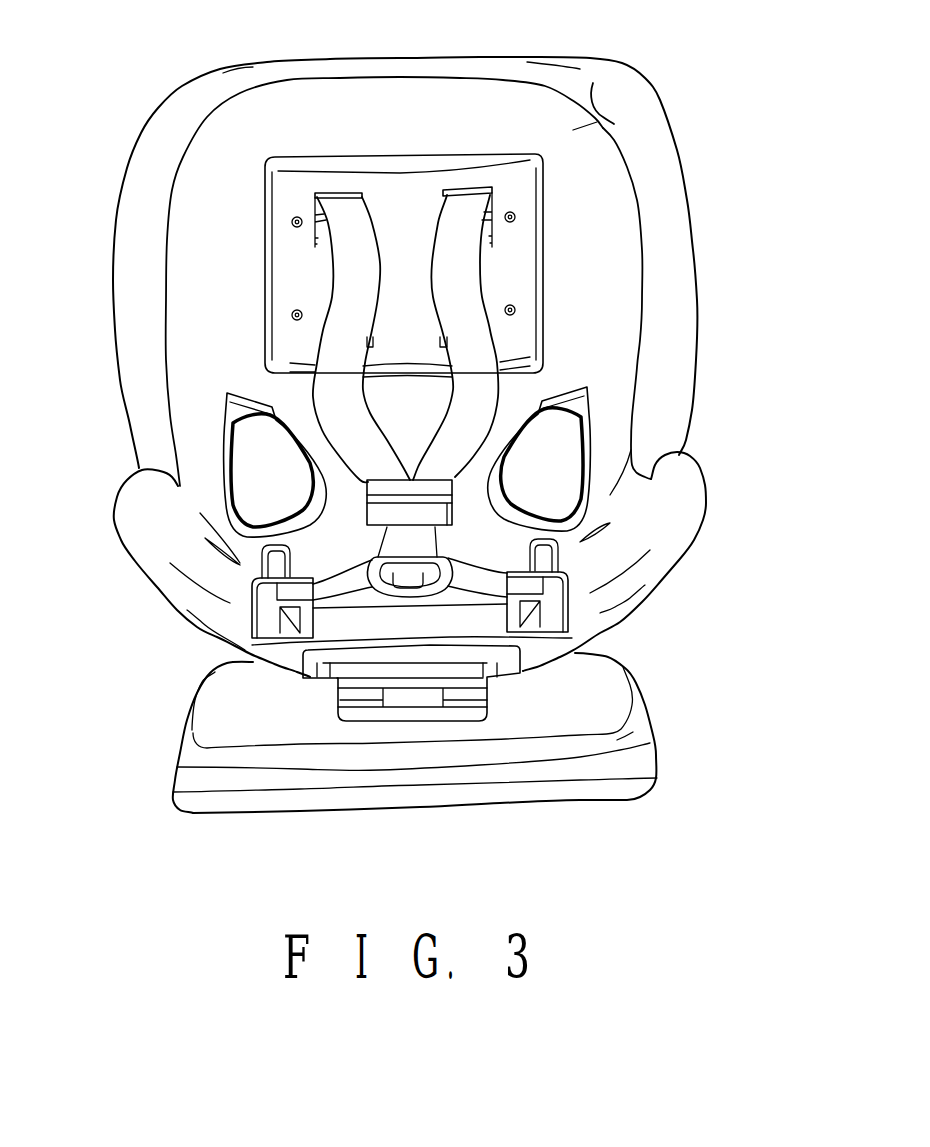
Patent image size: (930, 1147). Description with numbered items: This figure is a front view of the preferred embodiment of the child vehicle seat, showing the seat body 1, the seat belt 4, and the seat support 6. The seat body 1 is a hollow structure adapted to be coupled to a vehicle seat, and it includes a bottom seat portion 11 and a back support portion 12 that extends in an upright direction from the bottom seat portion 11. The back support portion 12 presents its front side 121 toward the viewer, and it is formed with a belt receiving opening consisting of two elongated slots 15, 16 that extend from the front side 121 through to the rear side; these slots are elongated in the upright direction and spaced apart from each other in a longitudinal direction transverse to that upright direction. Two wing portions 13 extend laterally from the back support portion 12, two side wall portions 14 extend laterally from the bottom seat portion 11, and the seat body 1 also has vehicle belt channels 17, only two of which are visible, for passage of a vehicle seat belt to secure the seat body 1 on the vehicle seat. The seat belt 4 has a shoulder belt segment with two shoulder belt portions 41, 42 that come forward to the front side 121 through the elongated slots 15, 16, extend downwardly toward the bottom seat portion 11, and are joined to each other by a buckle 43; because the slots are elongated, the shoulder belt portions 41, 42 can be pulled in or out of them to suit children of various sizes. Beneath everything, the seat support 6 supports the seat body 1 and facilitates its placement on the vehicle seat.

The seat body 1 is at (620, 330).
The seat belt 4 is at (382, 203).
The seat support 6 is at (640, 718).
The bottom seat portion 11 is at (613, 487).
The back support portion 12 is at (613, 183).
The wing portions 13 is at (160, 137).
The side wall portions 14 is at (133, 507).
The elongated slot 15 is at (323, 262).
The elongated slot 16 is at (483, 262).
The vehicle belt channels 17 is at (263, 463).
The shoulder belt portion 41 is at (342, 207).
The shoulder belt portion 42 is at (460, 212).
The buckle 43 is at (447, 508).
The front side 121 is at (593, 83).